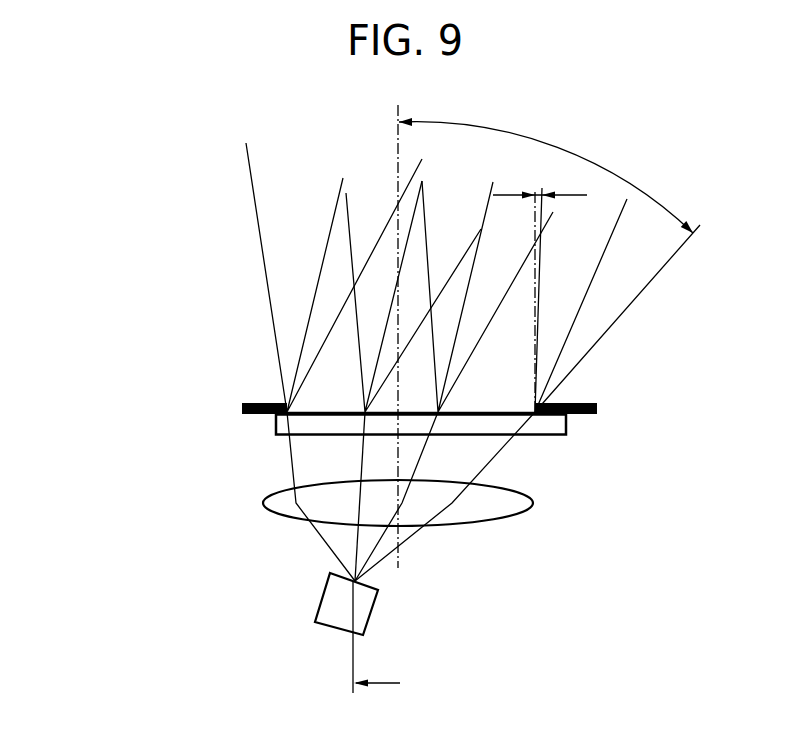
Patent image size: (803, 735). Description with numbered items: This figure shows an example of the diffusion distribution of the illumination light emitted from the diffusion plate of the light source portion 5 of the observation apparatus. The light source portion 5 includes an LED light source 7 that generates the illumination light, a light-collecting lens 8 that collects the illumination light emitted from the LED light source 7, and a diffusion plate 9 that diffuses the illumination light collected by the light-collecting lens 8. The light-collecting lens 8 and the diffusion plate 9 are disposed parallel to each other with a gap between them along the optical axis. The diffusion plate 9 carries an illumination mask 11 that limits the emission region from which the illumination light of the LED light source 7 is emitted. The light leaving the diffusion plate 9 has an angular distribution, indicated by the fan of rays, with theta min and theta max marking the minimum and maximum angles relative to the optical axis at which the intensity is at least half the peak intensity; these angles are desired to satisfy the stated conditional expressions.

The light source portion 5 is at (600, 463).
The LED light source 7 is at (377, 610).
The light-collecting lens 8 is at (533, 503).
The diffusion plate 9 is at (566, 422).
The illumination mask 11 is at (588, 402).